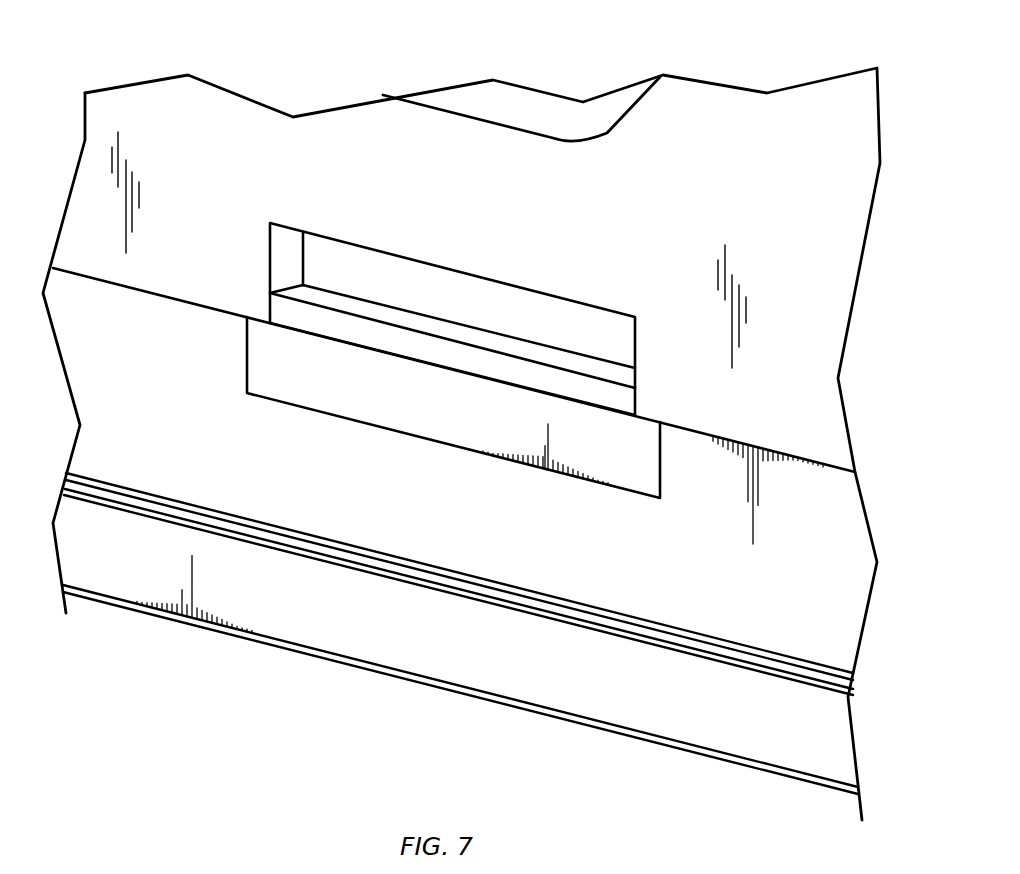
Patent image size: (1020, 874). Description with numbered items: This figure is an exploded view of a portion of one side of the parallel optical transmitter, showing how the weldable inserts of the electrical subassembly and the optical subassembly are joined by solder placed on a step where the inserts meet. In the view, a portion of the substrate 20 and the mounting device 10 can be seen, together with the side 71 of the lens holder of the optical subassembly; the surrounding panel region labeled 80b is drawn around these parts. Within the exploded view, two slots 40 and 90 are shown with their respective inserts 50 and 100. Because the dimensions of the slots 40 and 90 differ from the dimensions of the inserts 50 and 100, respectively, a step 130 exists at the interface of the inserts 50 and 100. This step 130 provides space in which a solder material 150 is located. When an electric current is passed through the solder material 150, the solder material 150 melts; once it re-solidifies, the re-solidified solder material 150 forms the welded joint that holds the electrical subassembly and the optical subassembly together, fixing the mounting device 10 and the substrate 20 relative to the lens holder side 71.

The mounting device 10 is at (627, 573).
The substrate 20 is at (467, 657).
The slot 40 is at (248, 358).
The insert 50 is at (300, 378).
The side of the lens holder 71 is at (540, 110).
The side panel 80b is at (797, 133).
The slot 90 is at (283, 236).
The insert 100 is at (575, 323).
The step 130 is at (452, 370).
The solder material 150 is at (363, 317).